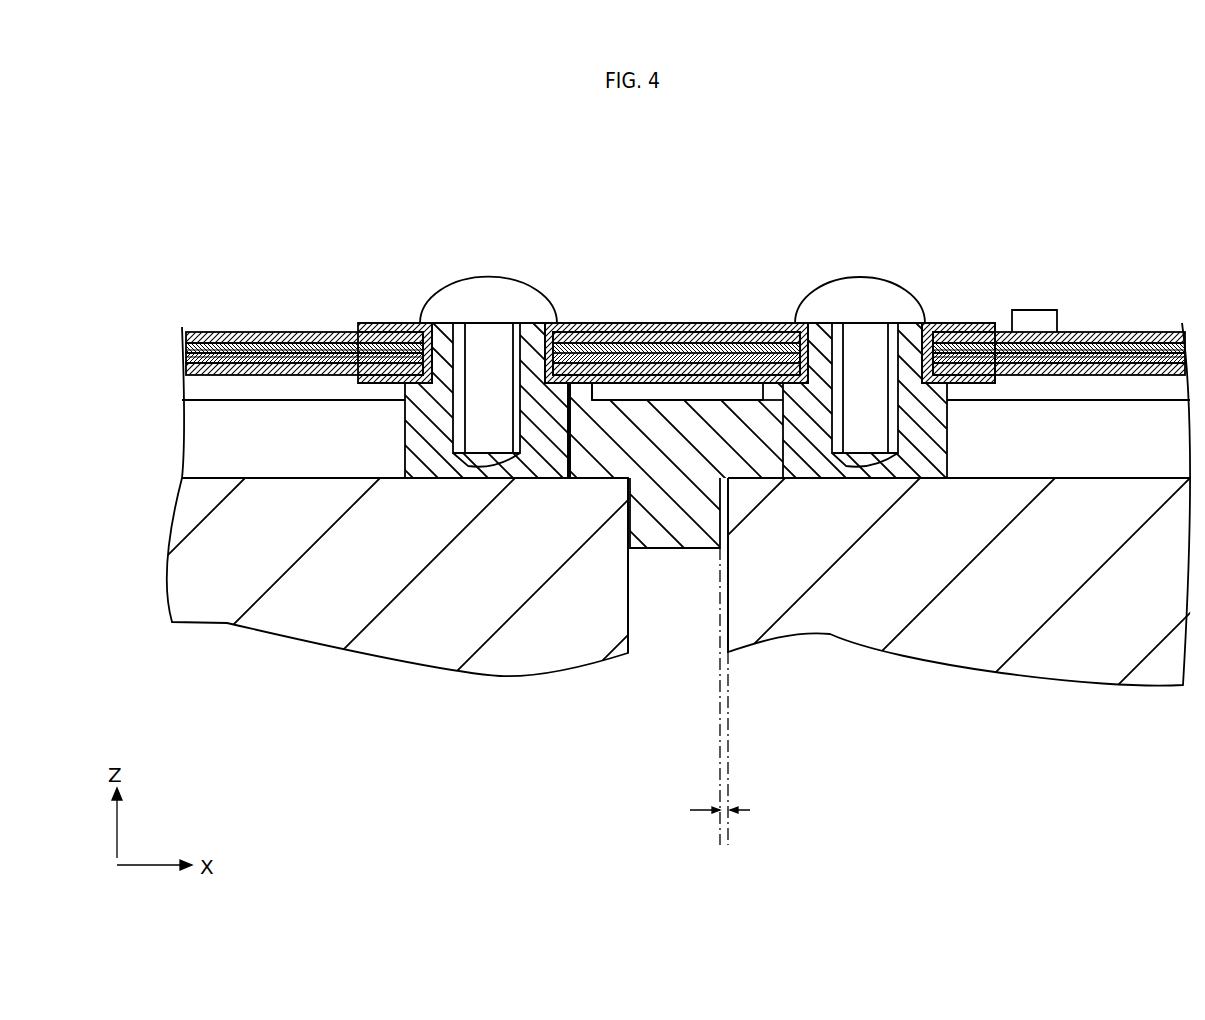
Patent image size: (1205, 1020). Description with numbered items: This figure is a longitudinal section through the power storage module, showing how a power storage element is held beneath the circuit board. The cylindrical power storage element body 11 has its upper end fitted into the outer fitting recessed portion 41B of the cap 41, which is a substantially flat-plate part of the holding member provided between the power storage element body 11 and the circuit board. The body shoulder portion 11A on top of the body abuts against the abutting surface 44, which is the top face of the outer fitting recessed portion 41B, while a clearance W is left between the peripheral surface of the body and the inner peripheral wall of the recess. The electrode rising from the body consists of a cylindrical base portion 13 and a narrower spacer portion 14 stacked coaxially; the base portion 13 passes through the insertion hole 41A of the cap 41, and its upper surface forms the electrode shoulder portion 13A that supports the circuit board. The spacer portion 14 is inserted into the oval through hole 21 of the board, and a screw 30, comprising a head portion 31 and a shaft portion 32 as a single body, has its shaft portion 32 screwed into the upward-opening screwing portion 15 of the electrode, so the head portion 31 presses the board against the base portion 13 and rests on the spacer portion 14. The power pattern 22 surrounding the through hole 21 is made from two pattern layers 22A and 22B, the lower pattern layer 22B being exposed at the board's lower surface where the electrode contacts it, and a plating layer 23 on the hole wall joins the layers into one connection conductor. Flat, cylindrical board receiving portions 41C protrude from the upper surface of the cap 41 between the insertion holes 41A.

The power storage element body 11 is at (895, 592).
The body shoulder portion 11A is at (760, 468).
The base portion 13 is at (803, 418).
The electrode shoulder portion 13A is at (775, 400).
The spacer portion 14 is at (765, 397).
The screwing portion 15 is at (832, 372).
The through hole 21 is at (545, 356).
The plating layer 23 is at (486, 395).
The power pattern 22 is at (662, 193).
The pattern layer 22A is at (571, 332).
The lower pattern layer 22B is at (618, 386).
The screw 30 is at (980, 202).
The head portion 31 is at (893, 291).
The shaft portion 32 is at (937, 325).
The cap 41 is at (1093, 400).
The insertion hole 41A is at (568, 452).
The outer fitting recessed portion 41B is at (627, 525).
The board receiving portion 41C is at (585, 392).
The abutting surface 44 is at (600, 480).
The clearance W is at (728, 800).